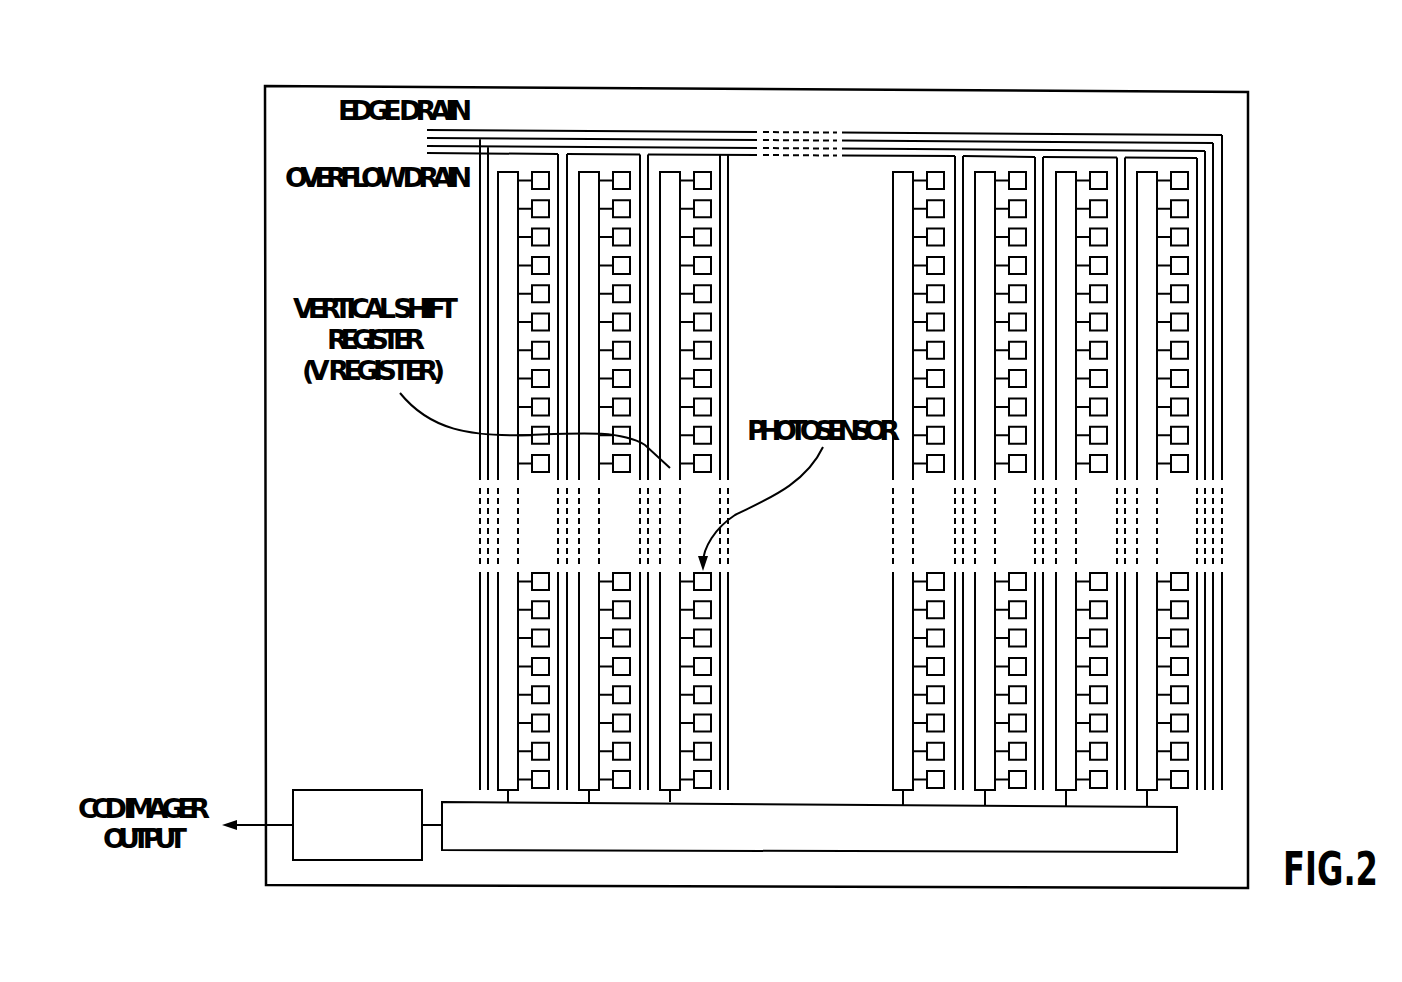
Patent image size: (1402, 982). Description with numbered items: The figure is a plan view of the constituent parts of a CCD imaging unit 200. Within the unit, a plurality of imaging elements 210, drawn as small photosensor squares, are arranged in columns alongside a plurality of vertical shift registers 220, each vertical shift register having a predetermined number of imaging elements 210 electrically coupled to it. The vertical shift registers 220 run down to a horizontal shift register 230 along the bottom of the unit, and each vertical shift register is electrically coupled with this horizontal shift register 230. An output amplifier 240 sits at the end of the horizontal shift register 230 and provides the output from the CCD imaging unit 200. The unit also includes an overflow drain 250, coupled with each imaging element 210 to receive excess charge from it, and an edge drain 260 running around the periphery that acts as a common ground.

The CCD imaging unit 200 is at (755, 88).
The imaging elements 210 is at (702, 172).
The vertical shift registers 220 is at (1066, 172).
The horizontal shift register 230 is at (808, 851).
The output amplifier 240 is at (355, 860).
The overflow drain 250 is at (1200, 183).
The edge drain 260 is at (1220, 148).